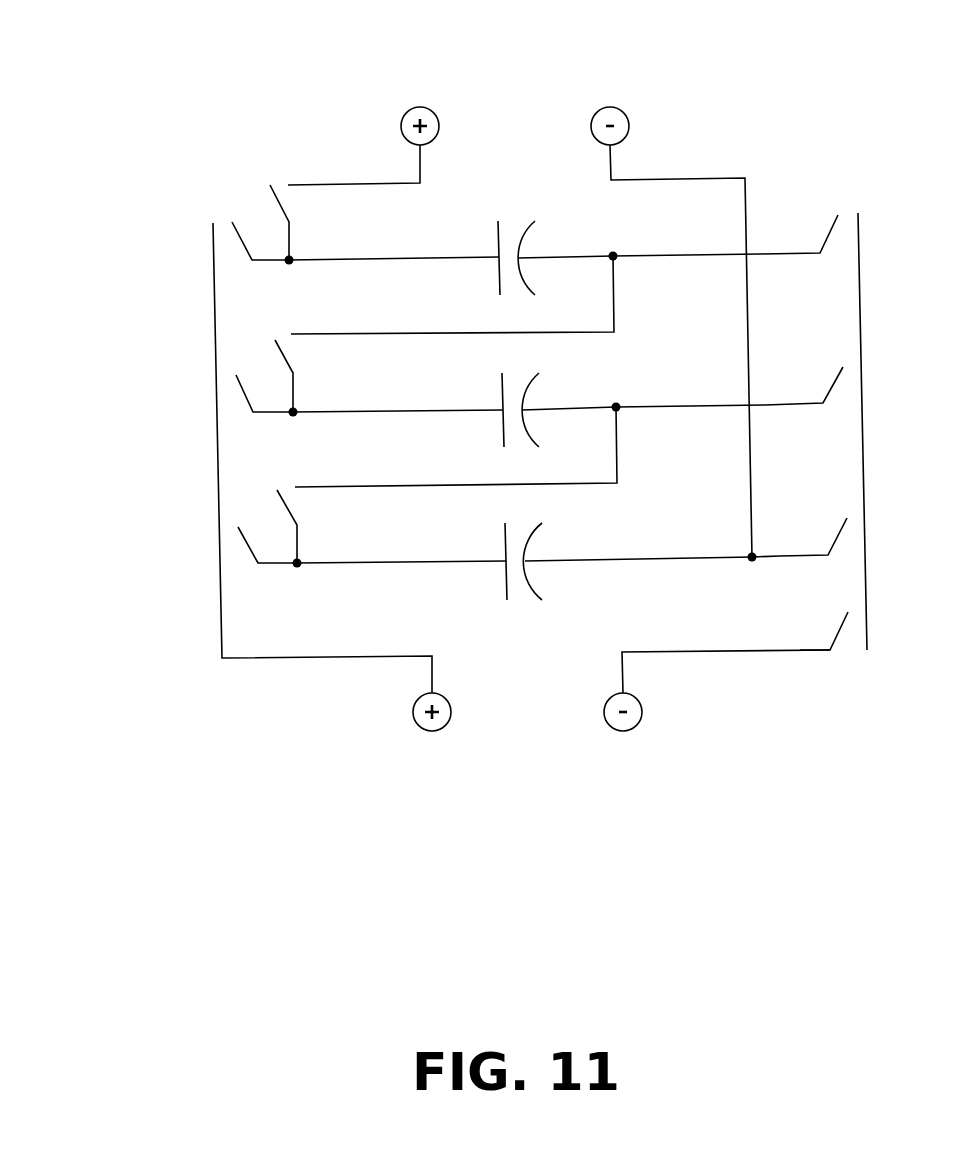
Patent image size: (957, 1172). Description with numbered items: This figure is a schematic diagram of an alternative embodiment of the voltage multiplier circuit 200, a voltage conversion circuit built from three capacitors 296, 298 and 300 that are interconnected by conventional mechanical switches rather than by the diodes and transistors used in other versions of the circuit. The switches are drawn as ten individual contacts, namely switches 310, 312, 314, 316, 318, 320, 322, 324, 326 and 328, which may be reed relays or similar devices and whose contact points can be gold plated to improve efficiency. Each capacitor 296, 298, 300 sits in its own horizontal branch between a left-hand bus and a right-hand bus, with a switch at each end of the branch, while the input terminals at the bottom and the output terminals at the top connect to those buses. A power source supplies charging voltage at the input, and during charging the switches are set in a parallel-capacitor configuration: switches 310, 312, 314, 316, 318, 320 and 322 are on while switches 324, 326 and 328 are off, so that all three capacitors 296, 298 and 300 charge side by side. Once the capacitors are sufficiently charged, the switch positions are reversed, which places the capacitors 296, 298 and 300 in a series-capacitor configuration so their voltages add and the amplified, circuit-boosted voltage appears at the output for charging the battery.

The voltage multiplier circuit 200 is at (151, 79).
The capacitor 296 is at (488, 257).
The capacitor 298 is at (492, 410).
The capacitor 300 is at (495, 561).
The mechanical switch 310 is at (842, 627).
The mechanical switch 312 is at (248, 548).
The mechanical switch 314 is at (245, 397).
The mechanical switch 316 is at (242, 245).
The mechanical switch 318 is at (831, 230).
The mechanical switch 320 is at (835, 383).
The mechanical switch 322 is at (840, 530).
The mechanical switch 324 is at (283, 508).
The mechanical switch 326 is at (276, 357).
The mechanical switch 328 is at (276, 205).